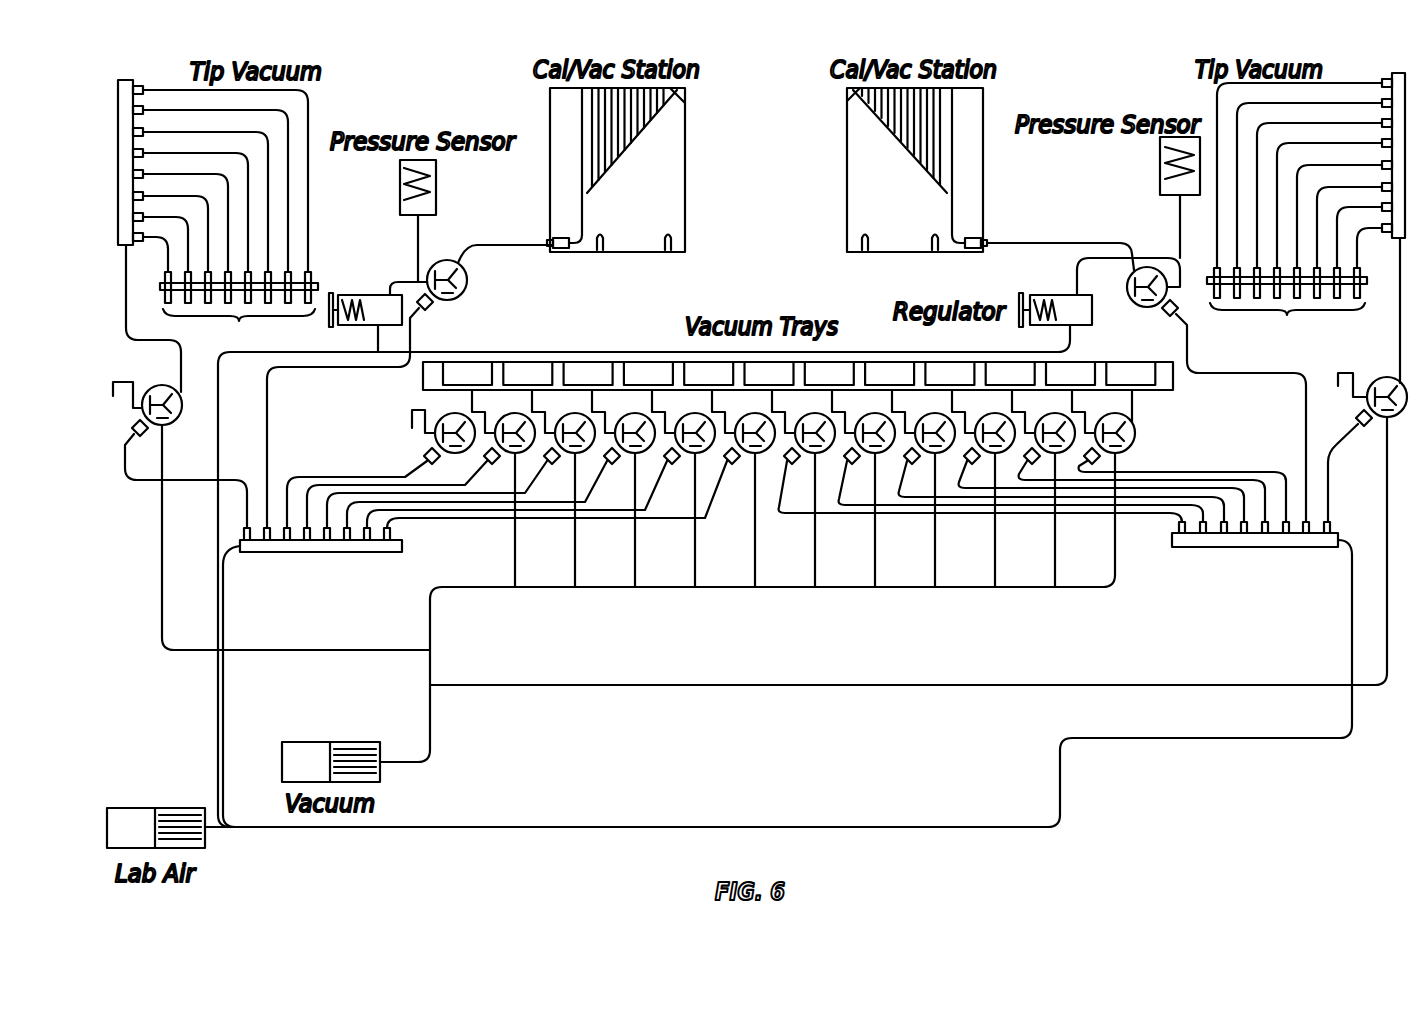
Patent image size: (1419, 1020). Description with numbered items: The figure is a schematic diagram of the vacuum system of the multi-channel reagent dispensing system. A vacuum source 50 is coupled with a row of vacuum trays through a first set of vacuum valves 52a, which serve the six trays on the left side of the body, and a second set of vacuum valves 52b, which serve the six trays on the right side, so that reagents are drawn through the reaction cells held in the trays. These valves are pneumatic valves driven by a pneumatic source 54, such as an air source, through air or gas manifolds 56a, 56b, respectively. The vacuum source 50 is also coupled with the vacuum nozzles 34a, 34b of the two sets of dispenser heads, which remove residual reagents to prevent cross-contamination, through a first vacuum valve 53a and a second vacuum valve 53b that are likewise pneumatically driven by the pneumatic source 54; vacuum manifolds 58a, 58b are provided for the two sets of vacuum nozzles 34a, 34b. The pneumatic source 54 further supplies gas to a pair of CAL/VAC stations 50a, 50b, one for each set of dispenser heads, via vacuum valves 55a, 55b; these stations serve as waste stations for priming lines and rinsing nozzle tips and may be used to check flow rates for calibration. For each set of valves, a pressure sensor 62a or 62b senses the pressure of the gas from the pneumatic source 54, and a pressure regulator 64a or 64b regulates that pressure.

The vacuum nozzles 34a is at (239, 311).
The vacuum nozzles 34b is at (1287, 306).
The vacuum source 50 is at (360, 742).
The CAL/VAC station 50a is at (687, 172).
The CAL/VAC station 50b is at (845, 172).
The first set of vacuum valves 52a is at (440, 421).
The second set of vacuum valves 52b is at (1140, 437).
The first vacuum valve 53a is at (157, 386).
The second vacuum valve 53b is at (1378, 380).
The pneumatic source 54 is at (165, 808).
The vacuum valve 55a is at (455, 299).
The vacuum valve 55b is at (1150, 308).
The air or gas manifold 56a is at (318, 554).
The air or gas manifold 56b is at (1258, 550).
The vacuum manifold 58a is at (128, 80).
The vacuum manifold 58b is at (1398, 73).
The pressure sensor 62a is at (398, 180).
The pressure sensor 62b is at (1158, 172).
The pressure regulator 64a is at (382, 276).
The pressure regulator 64b is at (1060, 295).